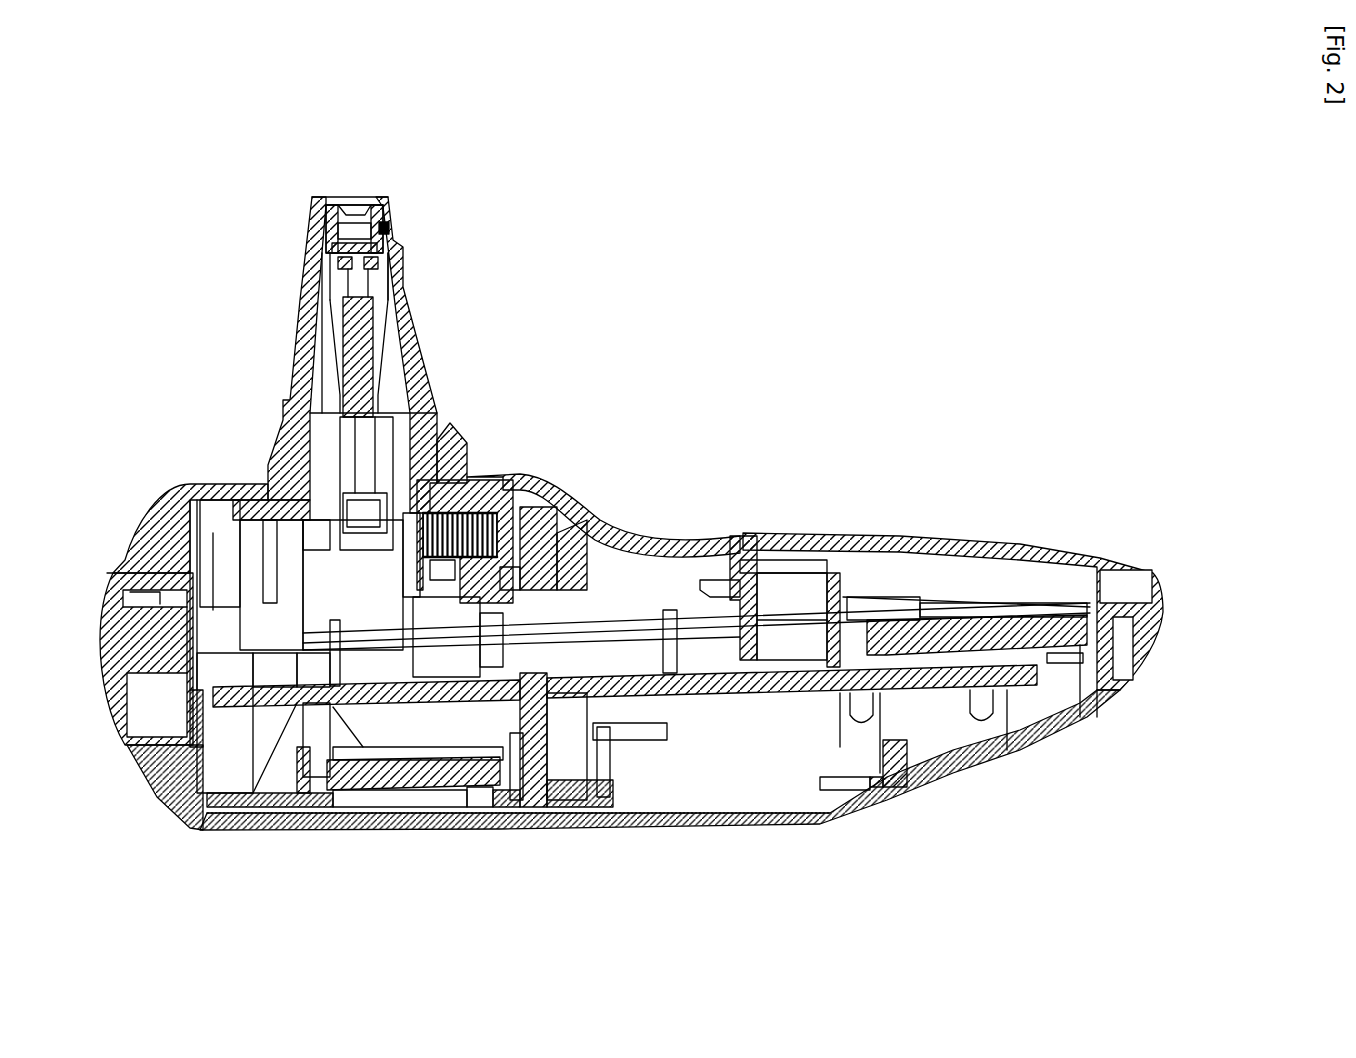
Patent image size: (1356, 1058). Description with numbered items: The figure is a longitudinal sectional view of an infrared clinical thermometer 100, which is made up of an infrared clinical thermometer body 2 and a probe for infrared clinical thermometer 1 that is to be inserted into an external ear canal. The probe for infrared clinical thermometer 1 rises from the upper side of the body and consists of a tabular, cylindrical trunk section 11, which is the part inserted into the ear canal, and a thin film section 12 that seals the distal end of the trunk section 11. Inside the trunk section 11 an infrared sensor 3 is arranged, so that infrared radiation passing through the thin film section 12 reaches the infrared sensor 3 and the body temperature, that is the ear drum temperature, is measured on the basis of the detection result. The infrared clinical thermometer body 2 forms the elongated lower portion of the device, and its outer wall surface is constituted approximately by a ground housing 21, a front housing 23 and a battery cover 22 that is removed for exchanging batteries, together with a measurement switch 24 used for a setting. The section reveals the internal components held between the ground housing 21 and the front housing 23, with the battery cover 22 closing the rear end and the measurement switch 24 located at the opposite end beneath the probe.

The infrared clinical thermometer 100 is at (803, 266).
The probe for infrared clinical thermometer 1 is at (272, 292).
The trunk section 11 is at (310, 300).
The thin film section 12 is at (357, 200).
The infrared sensor 3 is at (393, 230).
The infrared clinical thermometer body 2 is at (160, 824).
The ground housing 21 is at (647, 533).
The battery cover 22 is at (977, 540).
The front housing 23 is at (1000, 768).
The measurement switch 24 is at (128, 615).